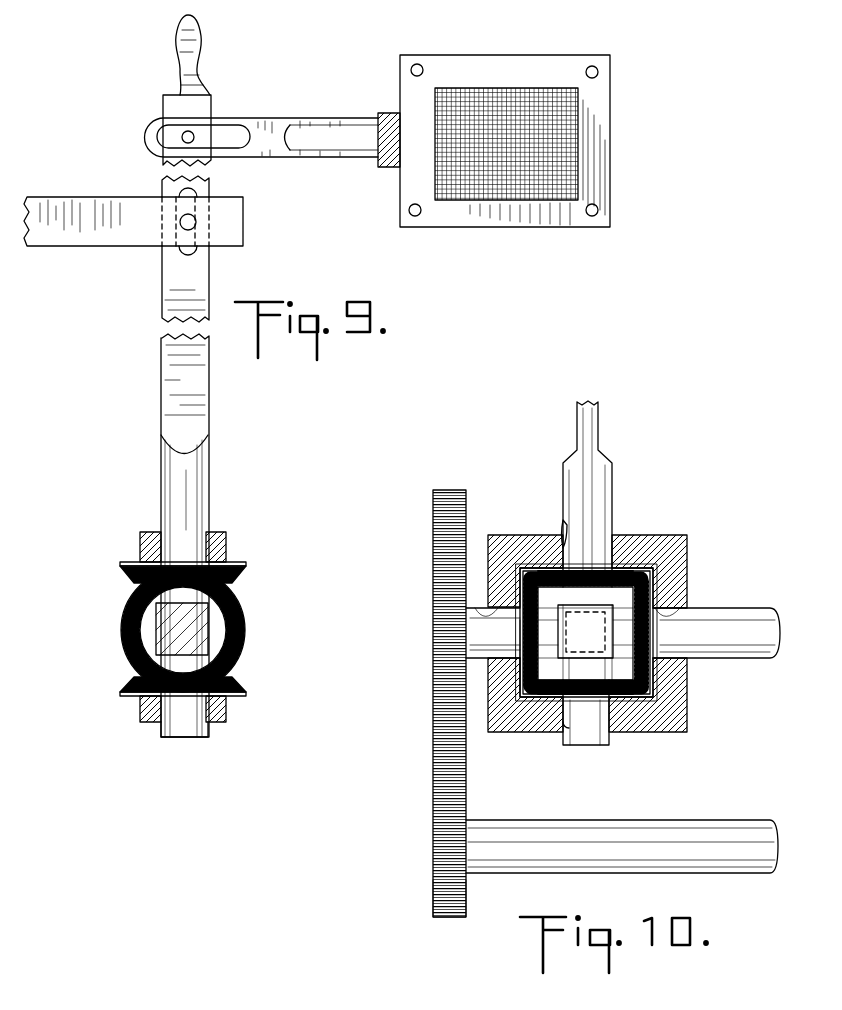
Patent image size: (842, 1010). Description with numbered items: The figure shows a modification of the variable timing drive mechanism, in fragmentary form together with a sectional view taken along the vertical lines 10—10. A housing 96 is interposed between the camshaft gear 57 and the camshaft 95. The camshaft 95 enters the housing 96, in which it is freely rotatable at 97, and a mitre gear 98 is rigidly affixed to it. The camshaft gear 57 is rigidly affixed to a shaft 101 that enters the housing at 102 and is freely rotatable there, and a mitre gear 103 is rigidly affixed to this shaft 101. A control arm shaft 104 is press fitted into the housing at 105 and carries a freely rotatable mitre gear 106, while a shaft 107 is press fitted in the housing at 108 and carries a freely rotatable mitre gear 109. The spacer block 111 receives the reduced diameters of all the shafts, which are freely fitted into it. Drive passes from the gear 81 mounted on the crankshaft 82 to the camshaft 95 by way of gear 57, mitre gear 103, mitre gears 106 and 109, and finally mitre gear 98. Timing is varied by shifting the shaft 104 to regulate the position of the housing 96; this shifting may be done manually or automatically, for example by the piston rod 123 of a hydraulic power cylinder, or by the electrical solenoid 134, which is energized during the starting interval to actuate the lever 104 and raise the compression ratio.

In FIG. 9, the electrical solenoid 134 is at (628, 76).
In FIG. 9, the piston rod 123 is at (87, 198).
In FIG. 9, the control arm shaft 104 is at (165, 345).
In FIG. 10, the control arm shaft 104 is at (594, 433).
In FIG. 9, the section lines 10 is at (183, 425).
In FIG. 9, the mitre gear 106 is at (122, 568).
In FIG. 10, the mitre gear 106 is at (555, 576).
In FIG. 9, the spacer block 111 is at (160, 625).
In FIG. 10, the spacer block 111 is at (607, 612).
In FIG. 9, the mitre gear 98 is at (122, 645).
In FIG. 10, the mitre gear 98 is at (650, 598).
In FIG. 9, the camshaft 95 is at (208, 640).
In FIG. 10, the camshaft 95 is at (745, 657).
In FIG. 9, the mitre gear 109 is at (120, 686).
In FIG. 10, the mitre gear 109 is at (633, 700).
In FIG. 9, the shaft 107 is at (160, 736).
In FIG. 10, the shaft 107 is at (582, 740).
In FIG. 10, the press fit location 105 is at (566, 540).
In FIG. 10, the housing 96 is at (660, 547).
In FIG. 10, the rotatable bearing location 97 is at (672, 618).
In FIG. 10, the shaft entry location 102 is at (462, 620).
In FIG. 10, the shaft 101 is at (478, 650).
In FIG. 10, the camshaft gear 57 is at (436, 740).
In FIG. 10, the mitre gear 103 is at (523, 680).
In FIG. 10, the press fit location 108 is at (570, 735).
In FIG. 10, the gear 81 is at (431, 884).
In FIG. 10, the crankshaft 82 is at (645, 858).